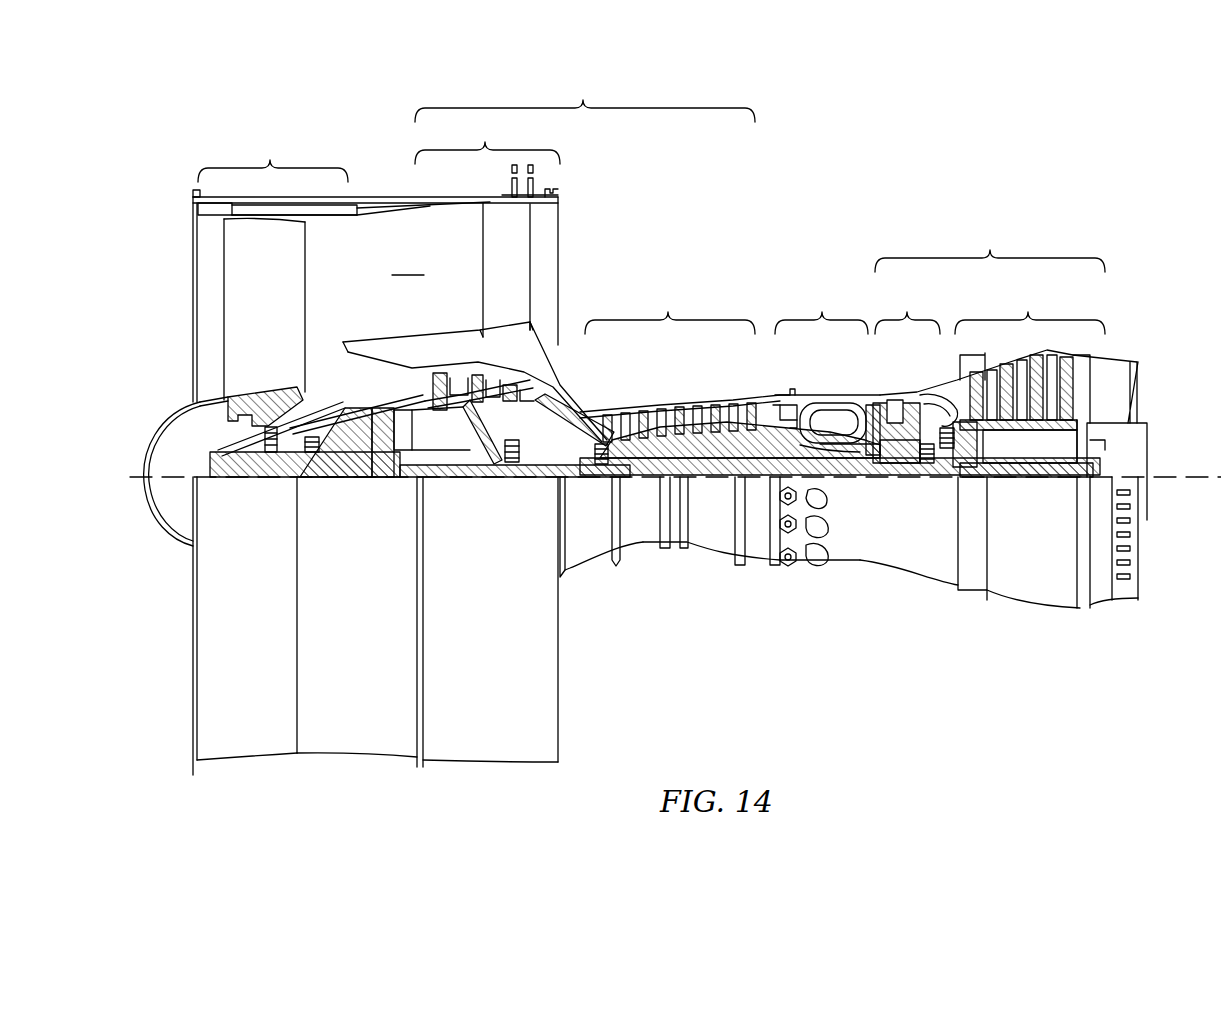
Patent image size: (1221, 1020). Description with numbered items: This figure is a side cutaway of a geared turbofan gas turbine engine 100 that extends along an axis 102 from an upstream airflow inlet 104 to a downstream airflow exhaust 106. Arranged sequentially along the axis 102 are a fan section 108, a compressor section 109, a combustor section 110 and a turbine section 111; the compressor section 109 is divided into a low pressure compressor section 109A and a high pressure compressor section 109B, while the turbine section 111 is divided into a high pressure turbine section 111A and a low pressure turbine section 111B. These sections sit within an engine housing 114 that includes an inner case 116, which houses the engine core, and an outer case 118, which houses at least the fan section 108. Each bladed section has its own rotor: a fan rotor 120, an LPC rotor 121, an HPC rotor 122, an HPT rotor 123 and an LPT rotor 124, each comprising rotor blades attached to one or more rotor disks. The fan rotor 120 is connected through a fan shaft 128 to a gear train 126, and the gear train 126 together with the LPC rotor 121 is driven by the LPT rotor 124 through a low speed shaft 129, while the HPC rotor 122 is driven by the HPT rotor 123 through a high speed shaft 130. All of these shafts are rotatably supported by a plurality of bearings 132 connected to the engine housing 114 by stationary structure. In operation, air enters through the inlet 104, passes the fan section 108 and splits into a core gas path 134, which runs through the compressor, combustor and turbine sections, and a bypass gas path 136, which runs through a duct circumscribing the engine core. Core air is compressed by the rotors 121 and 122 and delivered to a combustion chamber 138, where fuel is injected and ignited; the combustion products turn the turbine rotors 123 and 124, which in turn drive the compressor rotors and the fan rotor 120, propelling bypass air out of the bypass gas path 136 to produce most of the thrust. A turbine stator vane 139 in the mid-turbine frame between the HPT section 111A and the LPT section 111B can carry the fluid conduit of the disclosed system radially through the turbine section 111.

The gas turbine engine 100 is at (170, 182).
The axis 102 is at (1192, 485).
The upstream airflow inlet 104 is at (193, 262).
The downstream airflow exhaust 106 is at (1140, 388).
The fan section 108 is at (273, 155).
The compressor section 109 is at (585, 98).
The low pressure compressor (LPC) section 109A is at (487, 140).
The high pressure compressor (HPC) section 109B is at (670, 310).
The combustor section 110 is at (821, 310).
The turbine section 111 is at (990, 246).
The high pressure turbine (HPT) section 111A is at (907, 310).
The low pressure turbine (LPT) section 111B is at (1030, 310).
The engine housing 114 is at (576, 578).
The inner case 116 is at (758, 566).
The outer case 118 is at (503, 768).
The fan rotor 120 is at (212, 408).
The LPC rotor 121 is at (470, 456).
The HPC rotor 122 is at (707, 462).
The HPT rotor 123 is at (891, 476).
The LPT rotor 124 is at (1030, 430).
The gear train 126 is at (378, 479).
The fan shaft 128 is at (250, 478).
The low speed shaft 129 is at (1040, 479).
The high speed shaft 130 is at (836, 471).
The bearings 132 is at (300, 470).
The core gas path 134 is at (578, 410).
The bypass gas path 136 is at (475, 347).
The combustion chamber 138 is at (836, 412).
The turbine stator vane 139 is at (950, 394).